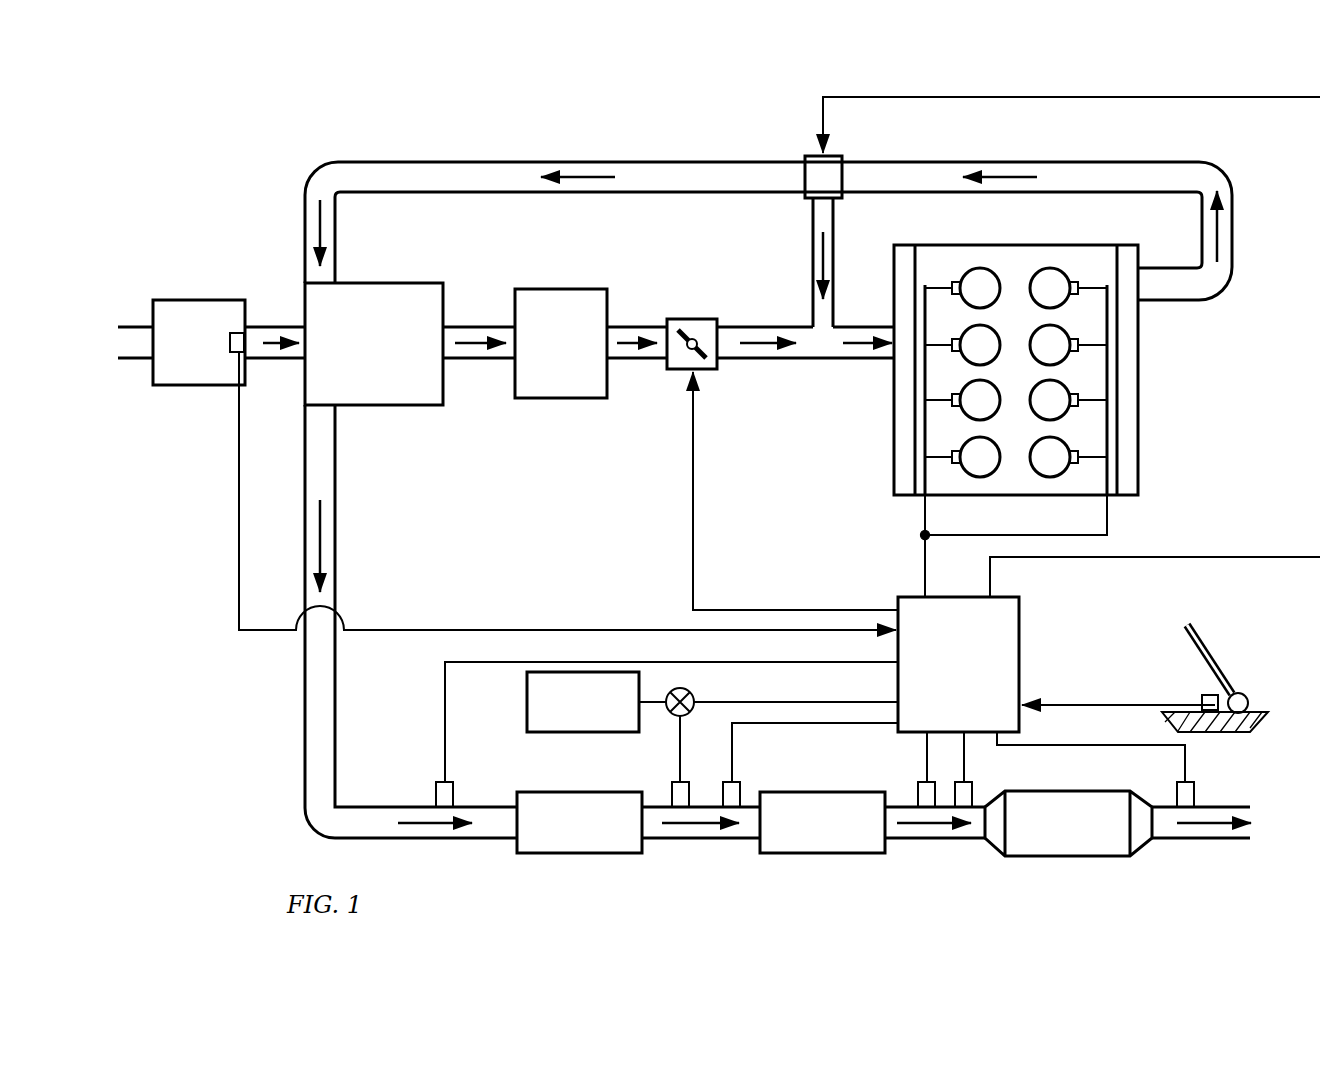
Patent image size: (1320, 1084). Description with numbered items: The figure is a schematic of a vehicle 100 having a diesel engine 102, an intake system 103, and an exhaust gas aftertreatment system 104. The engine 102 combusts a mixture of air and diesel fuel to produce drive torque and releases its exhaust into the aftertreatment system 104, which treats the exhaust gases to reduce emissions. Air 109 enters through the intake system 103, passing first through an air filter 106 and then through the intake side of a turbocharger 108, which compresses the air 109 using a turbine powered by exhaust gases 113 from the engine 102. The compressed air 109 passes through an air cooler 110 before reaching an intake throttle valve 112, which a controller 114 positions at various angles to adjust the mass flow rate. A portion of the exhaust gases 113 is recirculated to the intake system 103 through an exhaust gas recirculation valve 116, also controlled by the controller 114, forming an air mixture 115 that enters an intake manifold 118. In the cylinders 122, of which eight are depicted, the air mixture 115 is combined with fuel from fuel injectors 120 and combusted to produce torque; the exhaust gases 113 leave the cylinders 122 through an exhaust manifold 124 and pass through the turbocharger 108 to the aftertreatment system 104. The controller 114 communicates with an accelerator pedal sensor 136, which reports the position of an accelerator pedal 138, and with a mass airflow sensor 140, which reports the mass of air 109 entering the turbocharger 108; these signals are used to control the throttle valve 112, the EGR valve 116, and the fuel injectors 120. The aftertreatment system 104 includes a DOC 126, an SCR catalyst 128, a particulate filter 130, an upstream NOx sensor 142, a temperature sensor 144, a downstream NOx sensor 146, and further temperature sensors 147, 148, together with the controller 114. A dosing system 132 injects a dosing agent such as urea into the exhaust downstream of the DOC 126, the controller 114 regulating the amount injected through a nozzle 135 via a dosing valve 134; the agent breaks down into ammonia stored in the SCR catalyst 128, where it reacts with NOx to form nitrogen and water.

The vehicle 100 is at (265, 176).
The diesel engine 102 is at (1140, 507).
The intake system 103 is at (156, 288).
The exhaust gas aftertreatment system 104 is at (1197, 852).
The air filter 106 is at (215, 300).
The turbocharger 108 is at (413, 283).
The air 109 is at (468, 360).
The air cooler 110 is at (590, 289).
The intake throttle valve 112 is at (695, 319).
The exhaust gases 113 is at (1219, 236).
The controller 114 is at (1020, 650).
The air mixture 115 is at (860, 360).
The exhaust gas recirculation valve 116 is at (805, 160).
The intake manifold 118 is at (893, 305).
The fuel injectors 120 is at (952, 283).
The cylinders 122 is at (980, 268).
The exhaust manifold 124 is at (1127, 245).
The DOC 126 is at (553, 853).
The SCR catalyst 128 is at (808, 853).
The particulate filter 130 is at (1065, 856).
The dosing system 132 is at (527, 705).
The dosing valve 134 is at (692, 694).
The nozzle 135 is at (672, 790).
The accelerator pedal sensor 136 is at (1200, 700).
The accelerator pedal 138 is at (1215, 660).
The mass airflow sensor 140 is at (245, 322).
The upstream NOx sensor 142 is at (436, 790).
The temperature sensor 144 is at (741, 790).
The downstream NOx sensor 146 is at (918, 790).
The temperature sensor 147 is at (973, 790).
The temperature sensor 148 is at (1193, 790).